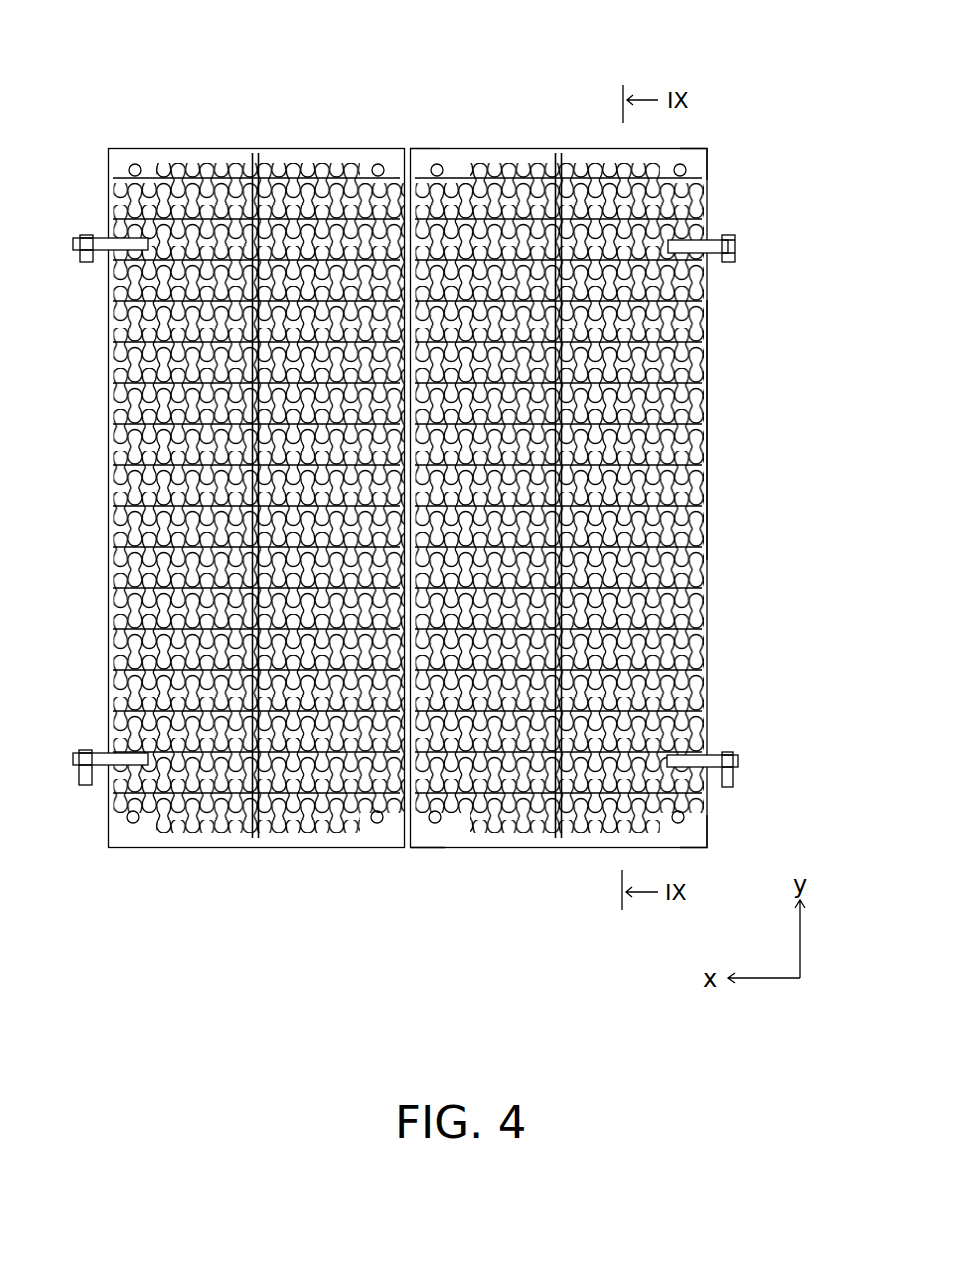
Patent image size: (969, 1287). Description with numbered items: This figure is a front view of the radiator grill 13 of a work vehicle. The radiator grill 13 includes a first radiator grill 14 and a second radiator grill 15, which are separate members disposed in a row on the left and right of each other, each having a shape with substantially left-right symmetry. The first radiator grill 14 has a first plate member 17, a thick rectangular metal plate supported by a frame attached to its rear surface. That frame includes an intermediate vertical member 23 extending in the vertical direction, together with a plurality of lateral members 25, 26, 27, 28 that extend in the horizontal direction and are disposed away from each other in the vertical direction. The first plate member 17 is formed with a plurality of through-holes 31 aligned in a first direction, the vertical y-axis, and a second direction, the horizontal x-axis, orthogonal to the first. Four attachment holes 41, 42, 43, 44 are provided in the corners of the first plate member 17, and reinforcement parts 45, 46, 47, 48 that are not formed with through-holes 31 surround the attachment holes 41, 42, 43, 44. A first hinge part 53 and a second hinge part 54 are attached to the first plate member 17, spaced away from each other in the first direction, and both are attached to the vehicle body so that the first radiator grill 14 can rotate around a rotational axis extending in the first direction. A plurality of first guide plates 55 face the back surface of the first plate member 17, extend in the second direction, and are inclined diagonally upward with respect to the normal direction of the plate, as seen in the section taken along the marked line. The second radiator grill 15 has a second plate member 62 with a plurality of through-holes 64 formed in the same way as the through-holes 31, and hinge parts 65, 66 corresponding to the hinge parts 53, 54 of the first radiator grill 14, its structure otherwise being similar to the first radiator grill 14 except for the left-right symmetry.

The radiator grill 13 is at (538, 37).
The first radiator grill 14 is at (542, 130).
The second radiator grill 15 is at (347, 135).
The first plate member 17 is at (707, 430).
The intermediate vertical member 23 is at (578, 810).
The lateral member 25 is at (690, 303).
The lateral member 26 is at (690, 408).
The lateral member 27 is at (690, 550).
The lateral member 28 is at (680, 695).
The through-holes 31 is at (688, 470).
The attachment hole 41 is at (682, 166).
The attachment hole 42 is at (682, 827).
The attachment hole 43 is at (443, 160).
The attachment hole 44 is at (435, 820).
The reinforcement part 45 is at (700, 183).
The reinforcement part 46 is at (695, 810).
The reinforcement part 47 is at (420, 153).
The reinforcement part 48 is at (453, 838).
The first hinge part 53 is at (740, 247).
The second hinge part 54 is at (742, 762).
The first guide plates 55 is at (680, 632).
The second plate member 62 is at (247, 157).
The through-holes 64 is at (228, 157).
The hinge part 65 is at (88, 237).
The hinge part 66 is at (85, 752).